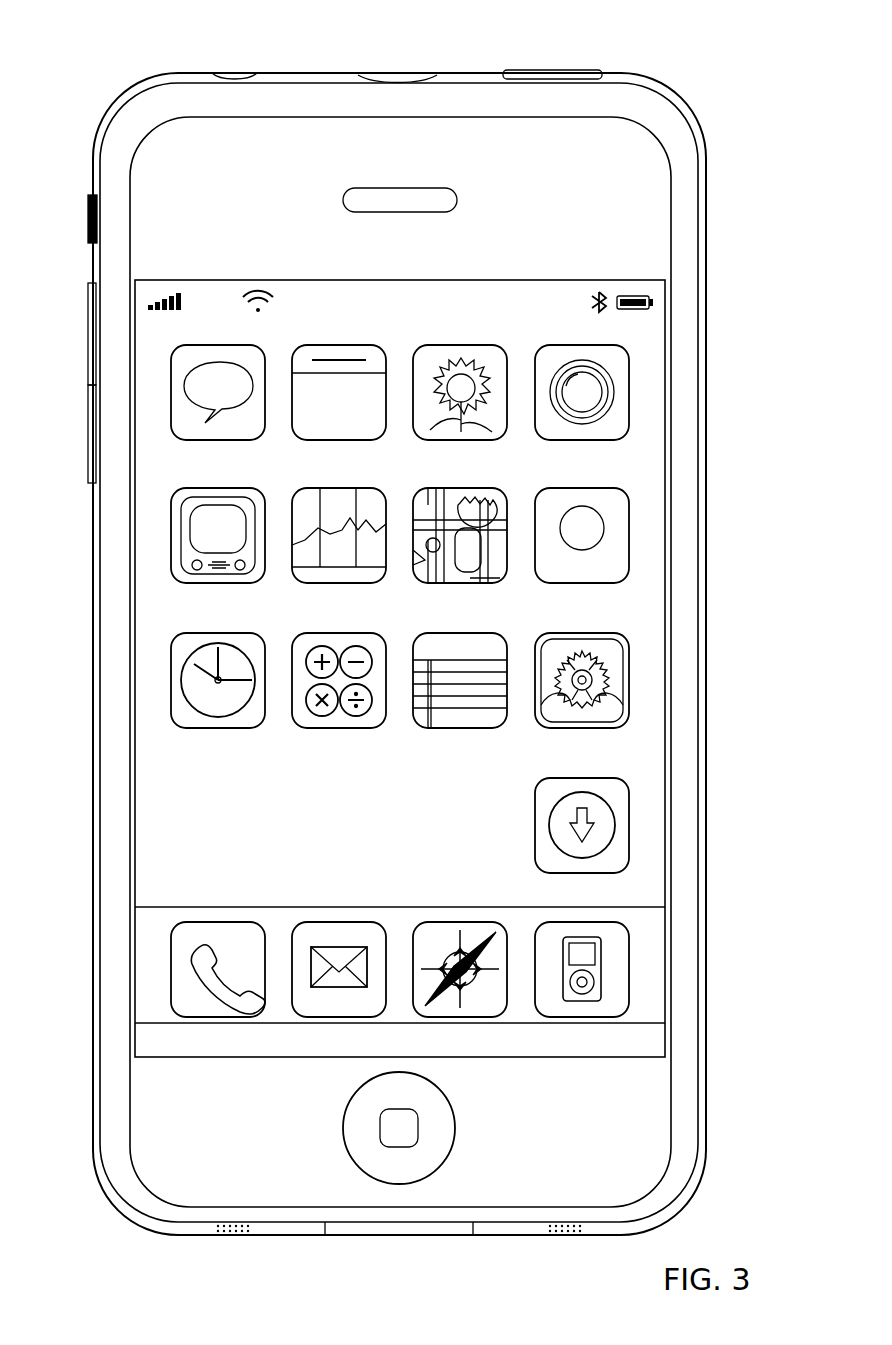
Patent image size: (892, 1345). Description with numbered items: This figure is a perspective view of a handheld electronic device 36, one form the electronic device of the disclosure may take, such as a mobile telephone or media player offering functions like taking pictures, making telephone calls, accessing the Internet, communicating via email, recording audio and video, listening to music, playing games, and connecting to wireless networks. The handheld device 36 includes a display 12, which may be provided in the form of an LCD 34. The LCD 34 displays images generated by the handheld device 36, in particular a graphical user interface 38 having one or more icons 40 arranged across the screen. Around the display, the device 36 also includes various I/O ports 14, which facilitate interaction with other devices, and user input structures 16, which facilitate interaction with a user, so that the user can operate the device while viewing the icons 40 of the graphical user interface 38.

The display 12 is at (648, 459).
The I/O ports 14 is at (232, 75).
The user input structures 16 is at (593, 72).
The LCD 34 is at (657, 645).
The handheld electronic device 36 is at (196, 32).
The graphical user interface 38 is at (158, 584).
The icons 40 is at (333, 346).